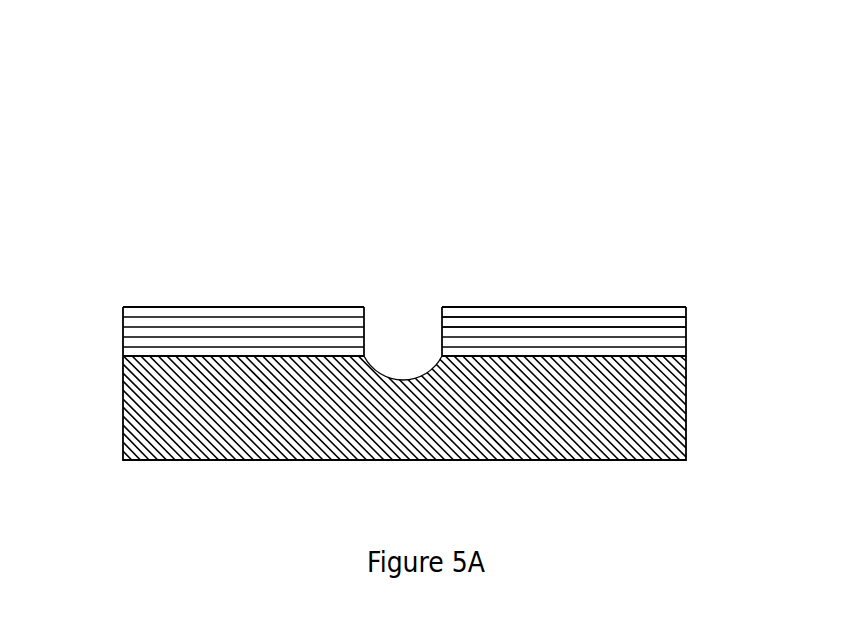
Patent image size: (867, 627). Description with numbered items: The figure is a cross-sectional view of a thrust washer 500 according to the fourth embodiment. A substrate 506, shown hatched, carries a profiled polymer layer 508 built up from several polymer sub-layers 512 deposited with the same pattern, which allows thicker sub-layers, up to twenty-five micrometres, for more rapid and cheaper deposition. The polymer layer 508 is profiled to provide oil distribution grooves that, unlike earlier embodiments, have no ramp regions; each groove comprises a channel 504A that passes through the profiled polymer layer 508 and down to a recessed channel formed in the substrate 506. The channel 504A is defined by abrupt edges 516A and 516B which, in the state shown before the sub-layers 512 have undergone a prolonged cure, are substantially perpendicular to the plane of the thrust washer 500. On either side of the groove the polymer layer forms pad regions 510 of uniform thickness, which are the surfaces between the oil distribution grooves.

The thrust washer 500 is at (238, 88).
The channel 504A is at (403, 288).
The substrate 506 is at (227, 443).
The profiled polymer layer 508 is at (118, 308).
The pad regions 510 is at (160, 304).
The polymer sub-layers 512 is at (686, 307).
The abrupt edge 516A is at (364, 325).
The abrupt edge 516B is at (442, 325).